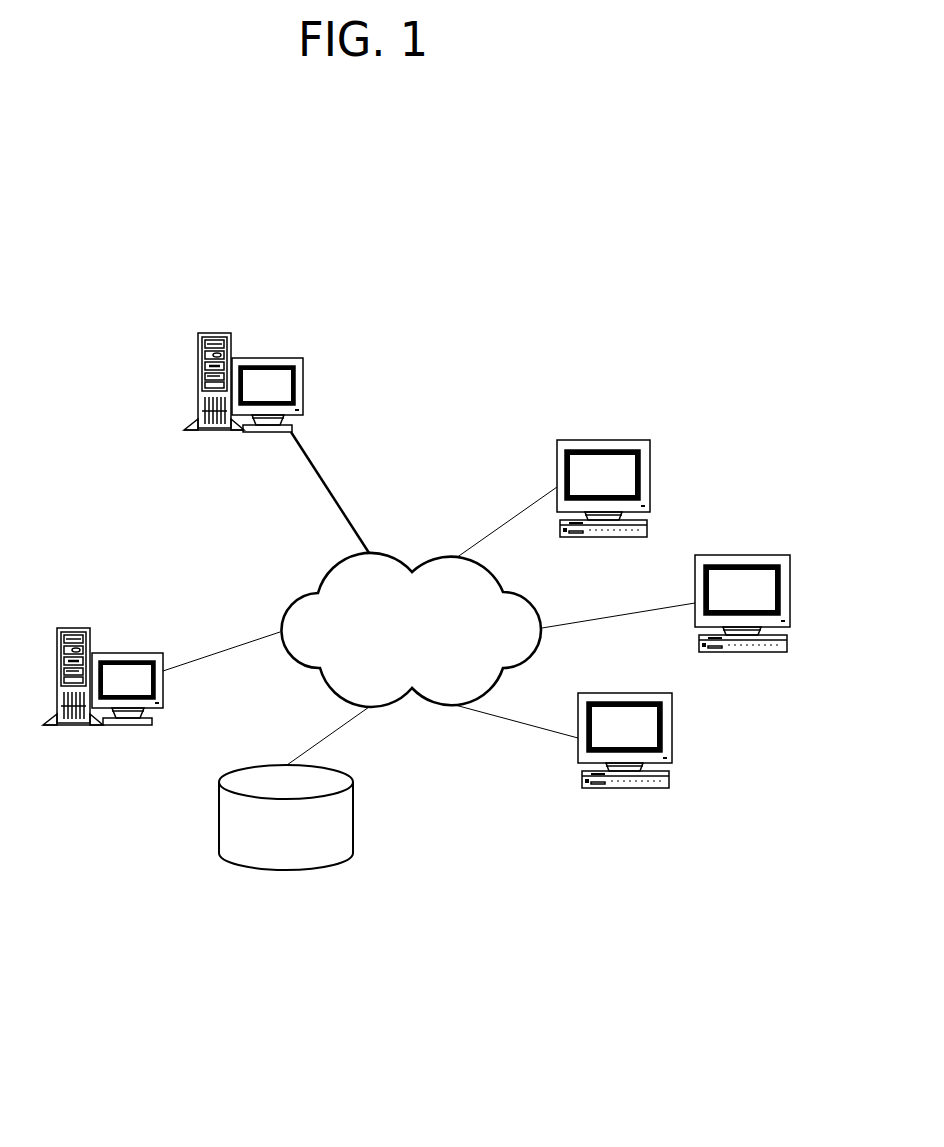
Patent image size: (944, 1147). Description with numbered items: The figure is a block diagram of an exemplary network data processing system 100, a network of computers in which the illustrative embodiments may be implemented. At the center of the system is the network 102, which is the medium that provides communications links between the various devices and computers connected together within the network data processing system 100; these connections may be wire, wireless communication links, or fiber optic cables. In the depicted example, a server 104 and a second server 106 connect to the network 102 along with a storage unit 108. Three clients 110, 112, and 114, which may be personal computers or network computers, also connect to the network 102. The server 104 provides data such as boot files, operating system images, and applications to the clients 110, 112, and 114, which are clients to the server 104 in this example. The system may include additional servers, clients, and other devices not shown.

The network data processing system 100 is at (95, 494).
The network 102 is at (427, 651).
The server 104 is at (268, 358).
The server 106 is at (128, 653).
The storage unit 108 is at (286, 869).
The client 110 is at (601, 440).
The client 112 is at (741, 555).
The client 114 is at (673, 732).